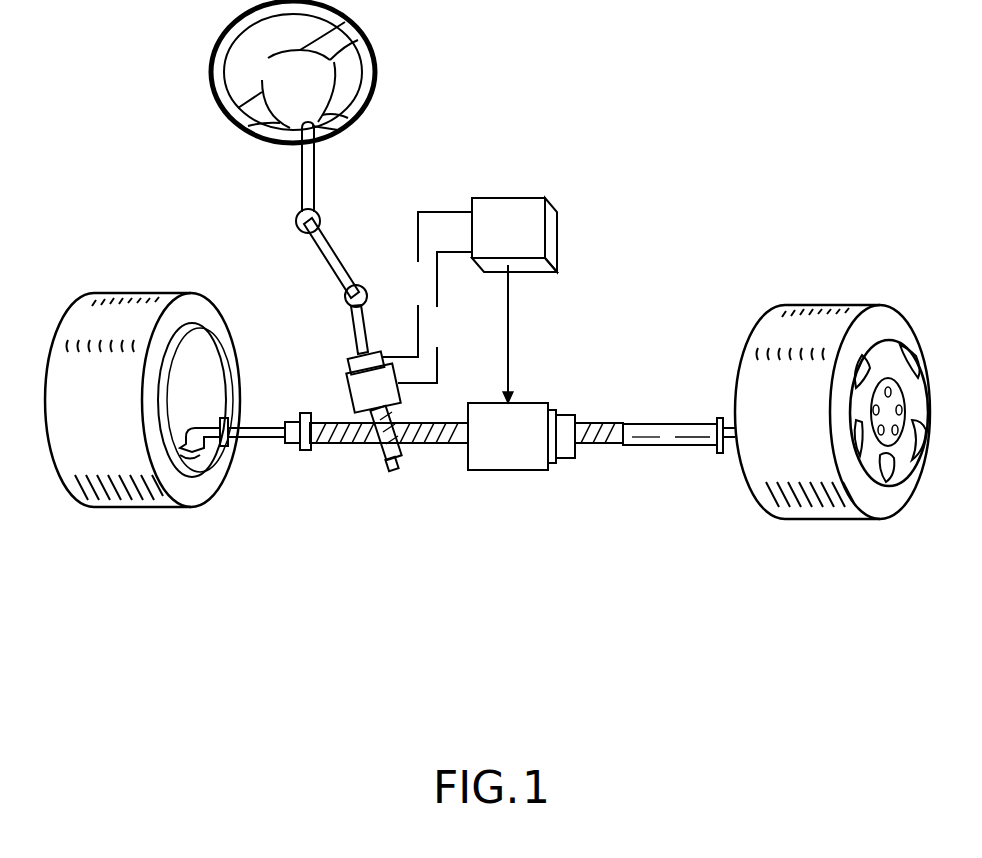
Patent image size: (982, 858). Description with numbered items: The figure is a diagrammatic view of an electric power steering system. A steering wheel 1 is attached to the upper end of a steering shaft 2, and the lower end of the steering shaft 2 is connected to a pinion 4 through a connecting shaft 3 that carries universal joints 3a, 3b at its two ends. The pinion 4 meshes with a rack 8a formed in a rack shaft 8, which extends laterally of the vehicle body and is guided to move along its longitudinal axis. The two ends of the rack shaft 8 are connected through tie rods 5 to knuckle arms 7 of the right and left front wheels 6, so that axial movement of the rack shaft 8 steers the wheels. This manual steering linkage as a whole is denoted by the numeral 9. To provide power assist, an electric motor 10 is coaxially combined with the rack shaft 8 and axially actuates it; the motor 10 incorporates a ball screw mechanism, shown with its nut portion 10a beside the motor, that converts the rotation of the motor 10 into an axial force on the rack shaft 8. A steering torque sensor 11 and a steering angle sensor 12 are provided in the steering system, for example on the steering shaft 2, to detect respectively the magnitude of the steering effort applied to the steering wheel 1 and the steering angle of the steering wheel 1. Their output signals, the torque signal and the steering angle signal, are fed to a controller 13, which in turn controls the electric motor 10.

The steering wheel 1 is at (218, 58).
The steering shaft 2 is at (298, 188).
The connecting shaft 3 is at (330, 255).
The universal joint 3a is at (323, 202).
The universal joint 3b is at (367, 298).
The pinion 4 is at (373, 455).
The tie rod 5 is at (253, 437).
The front wheel 6 is at (137, 292).
The knuckle arm 7 is at (197, 453).
The rack shaft 8 is at (663, 432).
The rack 8a is at (430, 445).
The manual steering system 9 is at (420, 528).
The electric motor 10 is at (508, 470).
The ball screw nut 10a is at (565, 460).
The steering torque sensor 11 is at (348, 385).
The steering angle sensor 12 is at (348, 362).
The controller 13 is at (557, 232).